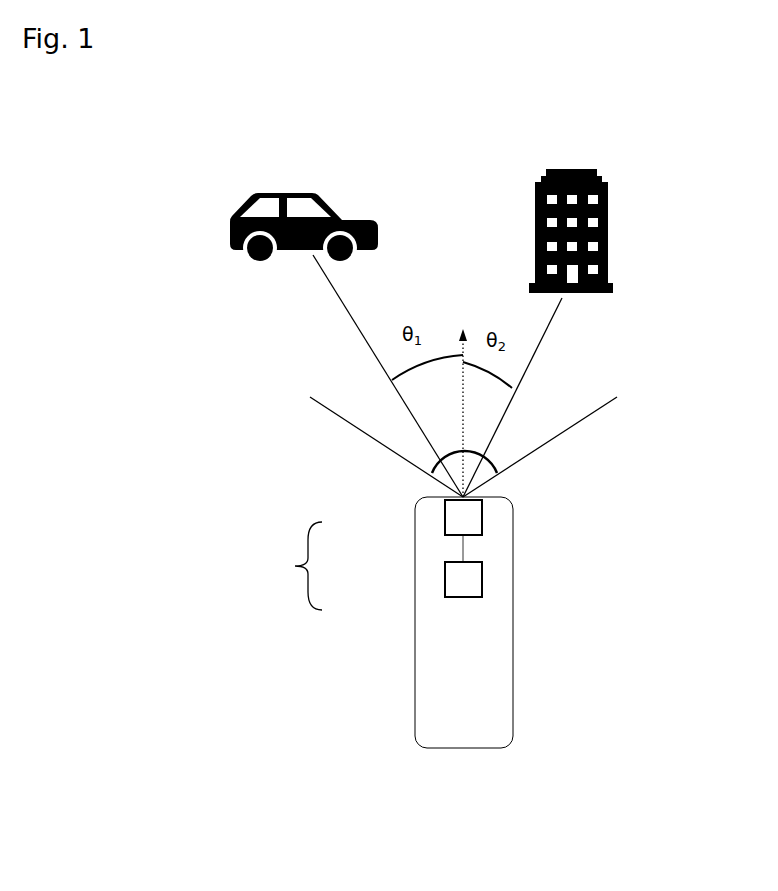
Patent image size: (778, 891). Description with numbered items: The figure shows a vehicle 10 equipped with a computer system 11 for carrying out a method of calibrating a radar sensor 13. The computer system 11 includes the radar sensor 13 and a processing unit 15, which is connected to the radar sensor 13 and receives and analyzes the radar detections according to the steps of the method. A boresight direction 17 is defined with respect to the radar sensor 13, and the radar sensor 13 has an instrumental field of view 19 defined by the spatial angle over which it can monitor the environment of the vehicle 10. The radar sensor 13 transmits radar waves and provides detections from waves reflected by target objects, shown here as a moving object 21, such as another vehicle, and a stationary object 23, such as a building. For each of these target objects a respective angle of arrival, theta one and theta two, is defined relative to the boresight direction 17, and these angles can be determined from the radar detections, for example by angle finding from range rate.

The vehicle 10 is at (425, 675).
The computer system 11 is at (282, 566).
The radar sensor 13 is at (443, 515).
The processing unit 15 is at (445, 578).
The boresight direction 17 is at (462, 320).
The instrumental field of view 19 is at (508, 455).
The moving object 21 is at (354, 218).
The stationary object 23 is at (597, 171).